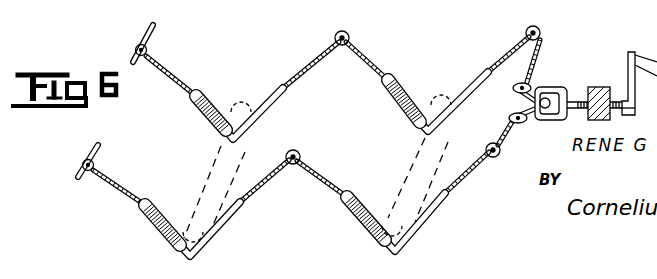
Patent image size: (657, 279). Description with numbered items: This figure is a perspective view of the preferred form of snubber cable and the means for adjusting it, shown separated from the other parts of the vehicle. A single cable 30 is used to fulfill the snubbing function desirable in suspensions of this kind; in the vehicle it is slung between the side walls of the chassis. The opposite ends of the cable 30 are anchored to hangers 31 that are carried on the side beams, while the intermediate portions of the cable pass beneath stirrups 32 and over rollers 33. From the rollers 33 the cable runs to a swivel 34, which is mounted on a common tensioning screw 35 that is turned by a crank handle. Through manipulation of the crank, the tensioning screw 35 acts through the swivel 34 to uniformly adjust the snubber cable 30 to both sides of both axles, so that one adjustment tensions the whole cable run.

The cable 30 is at (170, 65).
The hanger 31 is at (147, 27).
The stirrup 32 is at (258, 102).
The roller 33 is at (342, 47).
The swivel 34 is at (560, 87).
The tensioning screw 35 is at (582, 88).